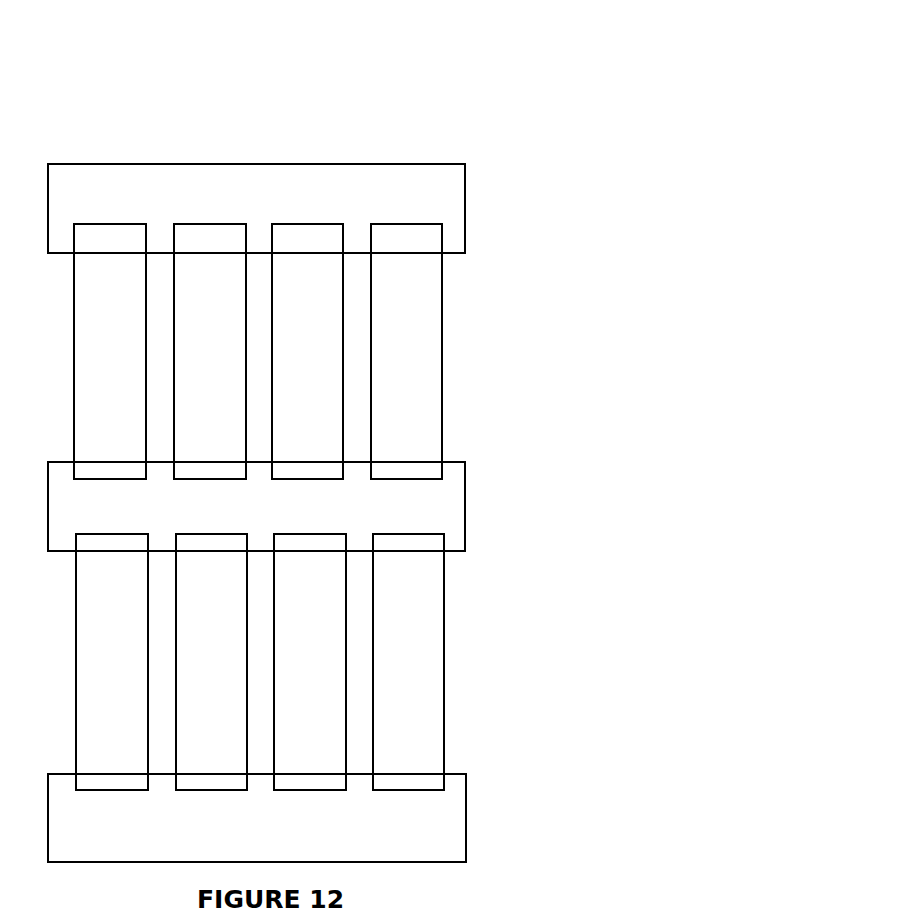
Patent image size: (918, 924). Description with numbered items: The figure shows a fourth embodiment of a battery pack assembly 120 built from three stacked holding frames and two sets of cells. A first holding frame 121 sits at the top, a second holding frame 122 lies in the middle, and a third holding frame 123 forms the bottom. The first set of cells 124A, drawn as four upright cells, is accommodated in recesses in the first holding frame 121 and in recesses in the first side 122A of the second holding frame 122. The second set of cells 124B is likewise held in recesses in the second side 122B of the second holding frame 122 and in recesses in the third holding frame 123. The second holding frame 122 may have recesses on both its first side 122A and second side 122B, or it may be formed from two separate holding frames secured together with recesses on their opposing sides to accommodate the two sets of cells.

The battery pack assembly 120 is at (421, 107).
The first holding frame 121 is at (418, 200).
The second holding frame 122 is at (423, 504).
The first side 122A is at (465, 462).
The second side 122B is at (465, 551).
The third holding frame 123 is at (409, 823).
The first set of cells 124A is at (408, 375).
The second set of cells 124B is at (413, 683).